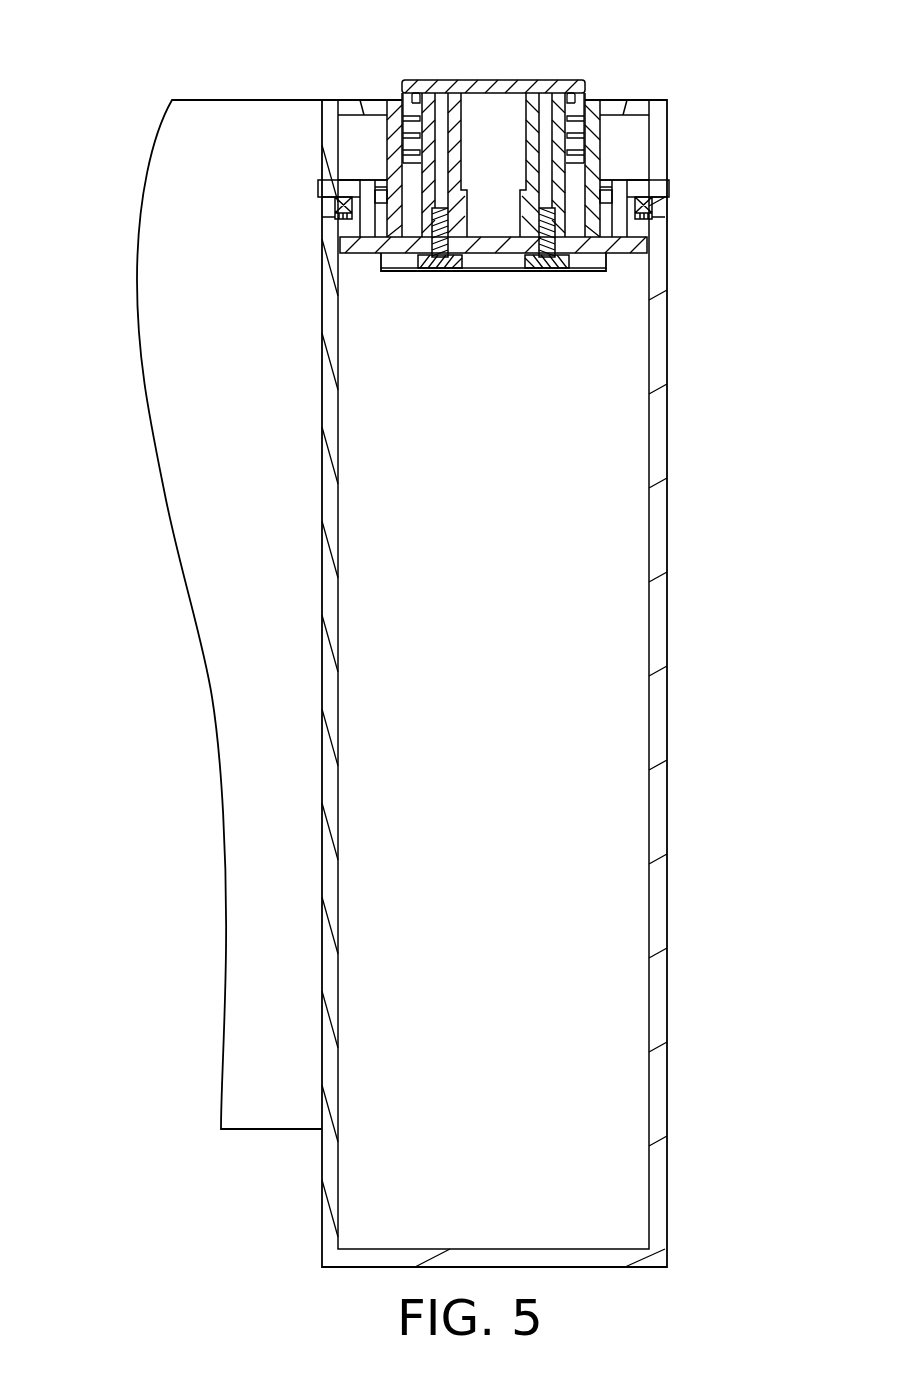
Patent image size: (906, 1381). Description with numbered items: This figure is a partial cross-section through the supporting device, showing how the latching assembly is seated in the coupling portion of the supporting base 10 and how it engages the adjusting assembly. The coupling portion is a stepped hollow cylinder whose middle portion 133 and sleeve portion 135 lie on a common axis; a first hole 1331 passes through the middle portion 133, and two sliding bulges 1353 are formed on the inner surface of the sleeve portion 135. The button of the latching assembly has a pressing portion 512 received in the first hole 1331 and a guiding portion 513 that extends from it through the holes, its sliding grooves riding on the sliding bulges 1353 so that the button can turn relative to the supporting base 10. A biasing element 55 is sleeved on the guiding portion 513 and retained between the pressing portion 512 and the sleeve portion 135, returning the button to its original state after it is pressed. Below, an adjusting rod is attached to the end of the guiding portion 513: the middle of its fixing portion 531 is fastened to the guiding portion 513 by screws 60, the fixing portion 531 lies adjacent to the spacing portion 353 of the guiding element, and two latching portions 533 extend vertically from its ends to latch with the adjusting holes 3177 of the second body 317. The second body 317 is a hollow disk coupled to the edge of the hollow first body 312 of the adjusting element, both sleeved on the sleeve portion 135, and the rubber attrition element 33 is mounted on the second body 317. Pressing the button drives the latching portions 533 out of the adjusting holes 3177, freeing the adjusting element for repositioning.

The supporting base 10 is at (240, 703).
The first body 312 is at (665, 812).
The second body 317 is at (335, 190).
The adjusting holes 3177 is at (335, 188).
The attrition element 33 is at (335, 193).
The biasing element 55 is at (600, 132).
The screws 60 is at (433, 268).
The middle portion 133 is at (593, 157).
The sleeve portion 135 is at (572, 209).
The spacing portion 353 is at (492, 262).
The pressing portion 512 is at (567, 88).
The guiding portion 513 is at (587, 104).
The fixing portion 531 is at (365, 243).
The latching portions 533 is at (367, 197).
The first hole 1331 is at (410, 114).
The sliding bulges 1353 is at (417, 187).